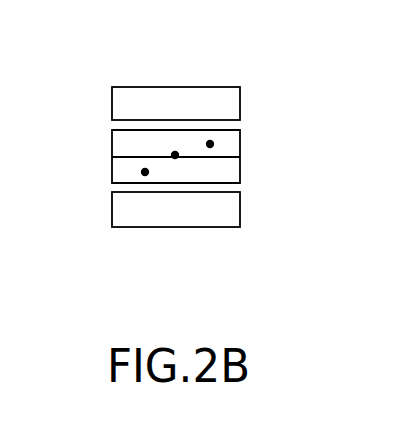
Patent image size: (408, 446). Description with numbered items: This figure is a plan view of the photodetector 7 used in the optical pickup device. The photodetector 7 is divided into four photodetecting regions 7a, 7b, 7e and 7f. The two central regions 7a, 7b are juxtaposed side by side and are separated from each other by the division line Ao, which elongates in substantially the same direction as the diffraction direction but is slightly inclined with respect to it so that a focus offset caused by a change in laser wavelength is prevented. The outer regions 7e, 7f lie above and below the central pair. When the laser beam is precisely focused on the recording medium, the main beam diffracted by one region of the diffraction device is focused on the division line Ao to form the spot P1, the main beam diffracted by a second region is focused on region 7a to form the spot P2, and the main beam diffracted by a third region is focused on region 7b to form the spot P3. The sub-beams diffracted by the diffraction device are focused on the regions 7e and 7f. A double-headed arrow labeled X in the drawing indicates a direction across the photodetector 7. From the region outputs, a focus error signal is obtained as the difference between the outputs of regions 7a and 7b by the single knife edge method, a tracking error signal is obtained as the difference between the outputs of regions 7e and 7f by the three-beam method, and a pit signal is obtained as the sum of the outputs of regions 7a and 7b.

The photodetector 7 is at (203, 177).
The region 7e is at (242, 98).
The region 7a is at (242, 143).
The division line Ao is at (228, 158).
The region 7b is at (238, 182).
The region 7f is at (240, 218).
The spot P1 is at (175, 155).
The spot P2 is at (210, 144).
The spot P3 is at (145, 172).
The direction X is at (77, 62).